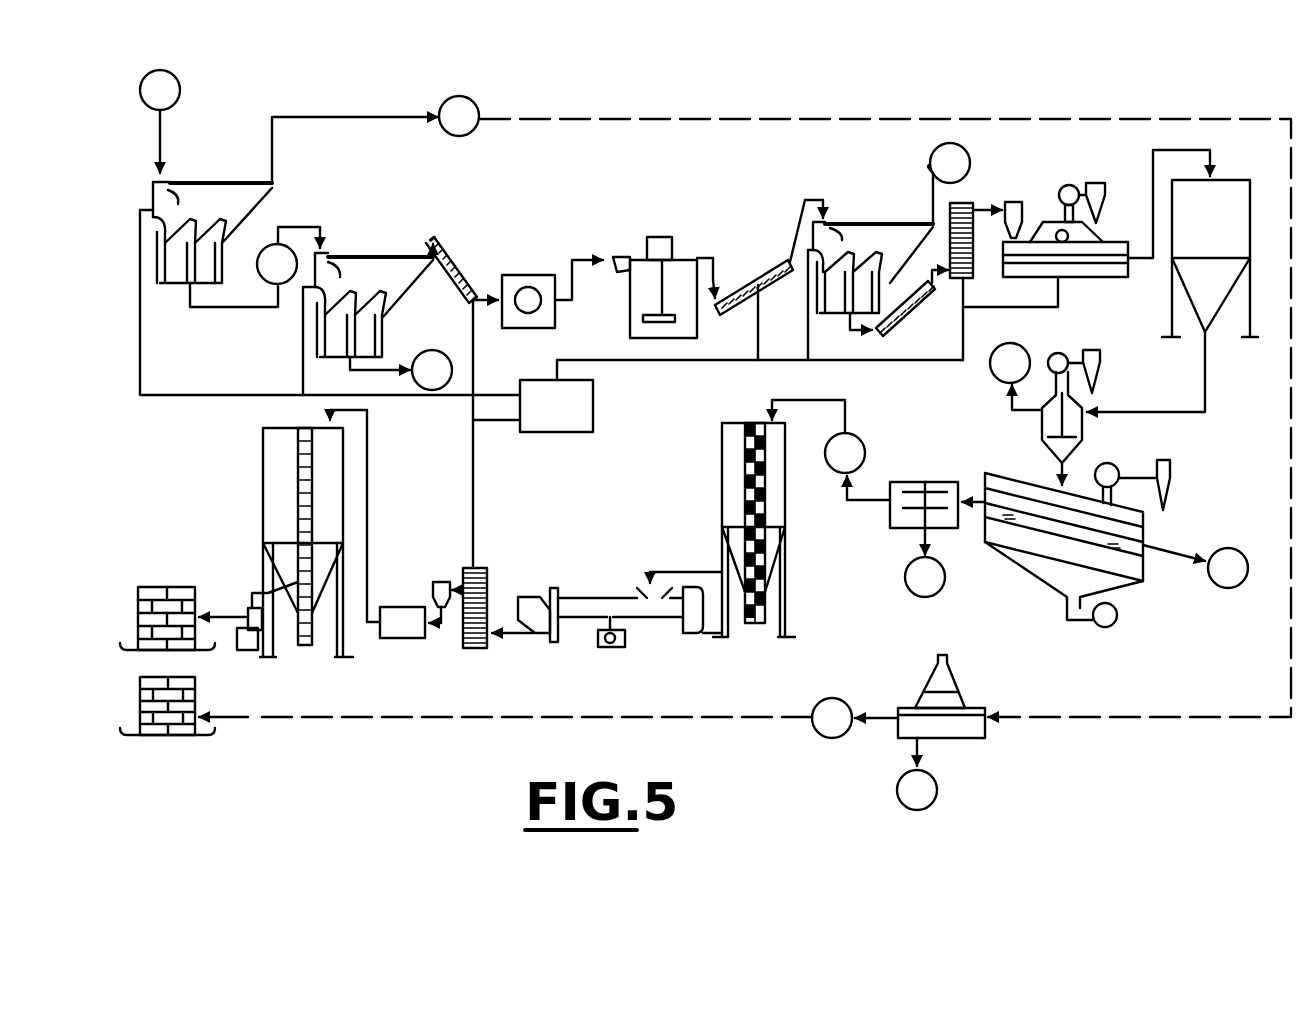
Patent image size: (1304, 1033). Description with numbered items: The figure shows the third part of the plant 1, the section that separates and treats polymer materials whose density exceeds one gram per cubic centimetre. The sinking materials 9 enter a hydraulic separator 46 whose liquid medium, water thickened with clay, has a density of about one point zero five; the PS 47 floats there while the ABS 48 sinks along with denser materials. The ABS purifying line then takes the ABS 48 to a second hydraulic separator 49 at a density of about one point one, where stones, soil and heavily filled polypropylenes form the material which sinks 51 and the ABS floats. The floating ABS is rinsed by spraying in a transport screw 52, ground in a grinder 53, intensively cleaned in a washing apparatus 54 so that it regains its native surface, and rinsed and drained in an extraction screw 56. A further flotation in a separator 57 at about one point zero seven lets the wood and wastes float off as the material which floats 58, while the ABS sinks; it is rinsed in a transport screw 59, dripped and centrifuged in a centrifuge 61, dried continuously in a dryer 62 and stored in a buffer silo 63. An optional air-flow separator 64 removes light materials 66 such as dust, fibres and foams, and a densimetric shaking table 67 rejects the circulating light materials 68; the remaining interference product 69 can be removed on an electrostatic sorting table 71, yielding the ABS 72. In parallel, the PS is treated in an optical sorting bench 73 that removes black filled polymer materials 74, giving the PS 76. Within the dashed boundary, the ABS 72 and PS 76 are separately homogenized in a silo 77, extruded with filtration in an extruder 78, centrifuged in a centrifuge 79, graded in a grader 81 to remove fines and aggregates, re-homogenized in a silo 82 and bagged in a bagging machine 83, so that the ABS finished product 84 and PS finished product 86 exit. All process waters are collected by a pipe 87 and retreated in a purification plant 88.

The plant 1 is at (1012, 80).
The sinking materials 9 is at (160, 121).
The hydraulic separator 46 is at (211, 182).
The PS 47 is at (459, 116).
The ABS 48 is at (288, 255).
The hydraulic separator 49 is at (378, 256).
The material which sinks 51 is at (432, 370).
The transport screw 52 is at (453, 252).
The grinder 53 is at (528, 274).
The washing apparatus 54 is at (660, 236).
The extraction screw 56 is at (758, 268).
The separator 57 is at (886, 221).
The material which floats 58 is at (950, 163).
The transport screw 59 is at (920, 308).
The centrifuge 61 is at (975, 207).
The dryer 62 is at (1076, 186).
The buffer silo 63 is at (1172, 296).
The air-flow separator 64 is at (1093, 350).
The light materials 66 is at (1016, 376).
The densimetric shaking table 67 is at (1146, 527).
The circulating light materials 68 is at (1195, 566).
The interference product 69 is at (925, 577).
The electrostatic sorting table 71 is at (920, 481).
The ABS 72 is at (818, 436).
The optical sorting bench 73 is at (970, 738).
The filled polymer materials 74 is at (917, 790).
The PS 76 is at (832, 718).
The silo 77 is at (720, 455).
The extruder 78 is at (645, 619).
The centrifuge 79 is at (480, 567).
The grader 81 is at (400, 606).
The silo 82 is at (262, 457).
The bagging machine 83 is at (248, 650).
The ABS finished product 84 is at (170, 586).
The PS finished product 86 is at (190, 735).
The pipe 87 is at (655, 362).
The purification plant 88 is at (575, 433).